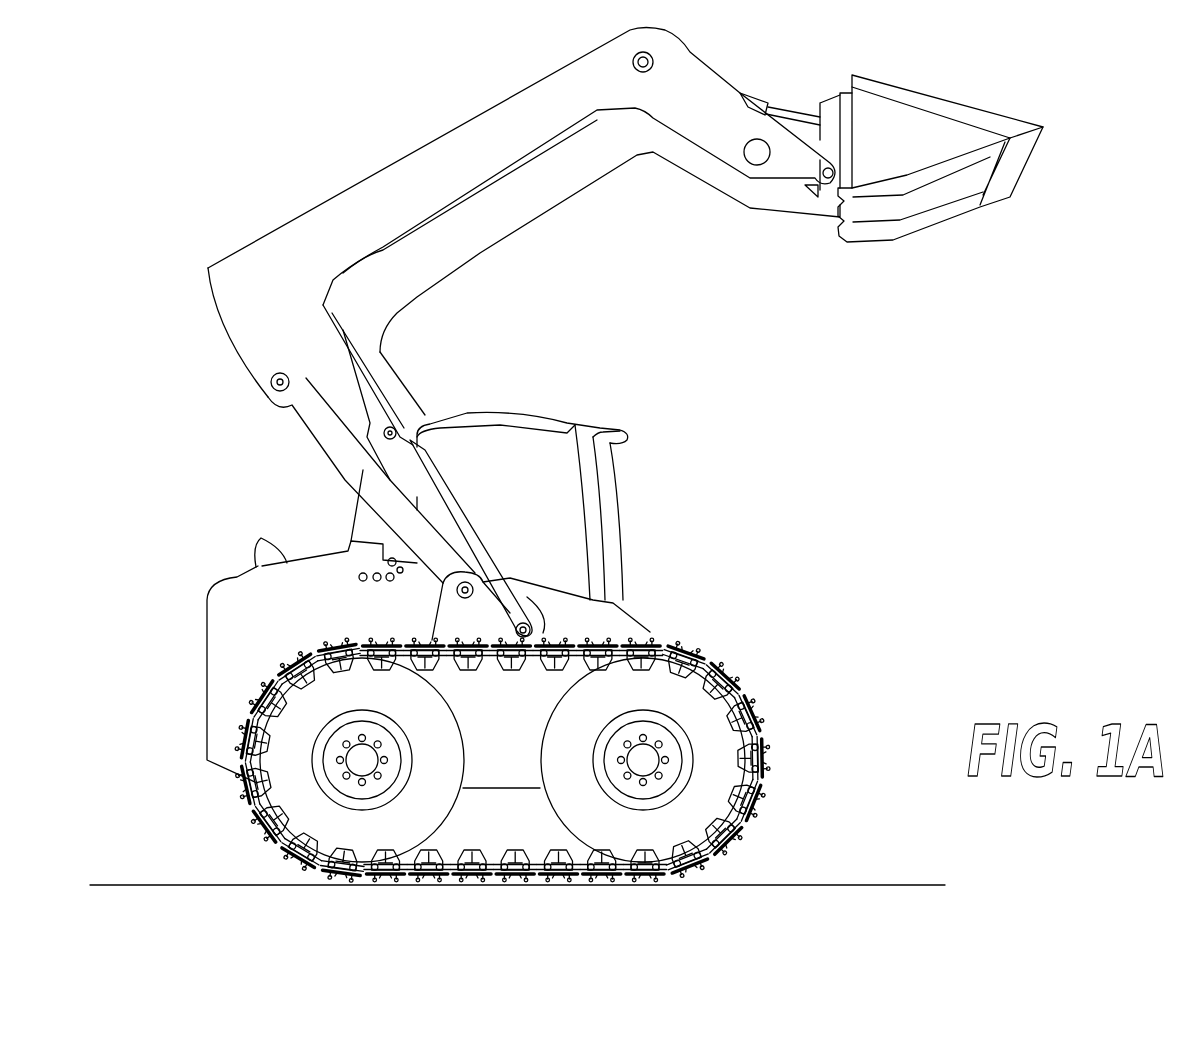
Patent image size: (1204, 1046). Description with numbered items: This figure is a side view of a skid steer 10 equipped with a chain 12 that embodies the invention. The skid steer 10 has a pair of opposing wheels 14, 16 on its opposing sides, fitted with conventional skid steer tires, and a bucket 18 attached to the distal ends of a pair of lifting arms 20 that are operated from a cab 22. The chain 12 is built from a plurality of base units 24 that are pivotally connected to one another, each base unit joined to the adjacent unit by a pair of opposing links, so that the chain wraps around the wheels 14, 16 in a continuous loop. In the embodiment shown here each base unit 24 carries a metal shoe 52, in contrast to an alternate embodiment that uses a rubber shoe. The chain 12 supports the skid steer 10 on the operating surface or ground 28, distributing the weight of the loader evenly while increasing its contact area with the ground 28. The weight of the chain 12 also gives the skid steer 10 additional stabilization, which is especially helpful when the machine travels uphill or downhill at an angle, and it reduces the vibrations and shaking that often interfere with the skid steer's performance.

The skid steer 10 is at (210, 590).
The chain 12 is at (519, 711).
The wheel 14 is at (262, 818).
The wheel 16 is at (750, 730).
The bucket 18 is at (940, 92).
The lifting arms 20 is at (425, 143).
The cab 22 is at (513, 443).
The base unit 24 is at (720, 677).
The ground 28 is at (213, 883).
The metal shoe 52 is at (680, 653).